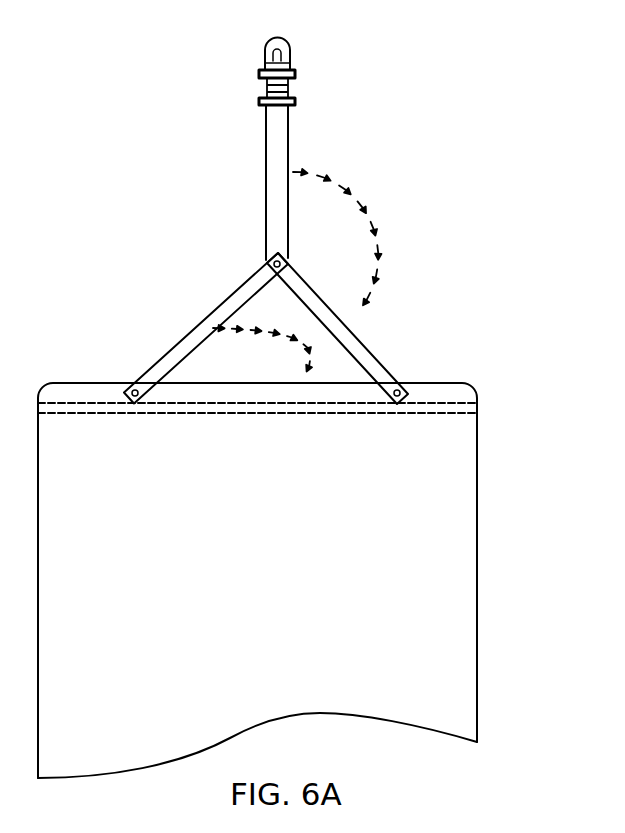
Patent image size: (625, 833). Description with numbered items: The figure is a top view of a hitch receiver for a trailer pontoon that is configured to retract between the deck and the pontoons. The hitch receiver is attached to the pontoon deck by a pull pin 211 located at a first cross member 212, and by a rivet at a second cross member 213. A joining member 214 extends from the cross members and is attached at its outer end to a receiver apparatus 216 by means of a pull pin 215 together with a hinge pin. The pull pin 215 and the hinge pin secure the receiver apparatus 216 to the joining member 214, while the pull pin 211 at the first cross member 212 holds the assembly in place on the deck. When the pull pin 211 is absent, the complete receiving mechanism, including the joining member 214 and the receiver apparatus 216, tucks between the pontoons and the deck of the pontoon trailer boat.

The pull pin 211 is at (137, 400).
The first cross member 212 is at (203, 328).
The second cross member 213 is at (290, 393).
The joining member 214 is at (272, 170).
The pull pin 215 is at (262, 76).
The receiver apparatus 216 is at (283, 43).